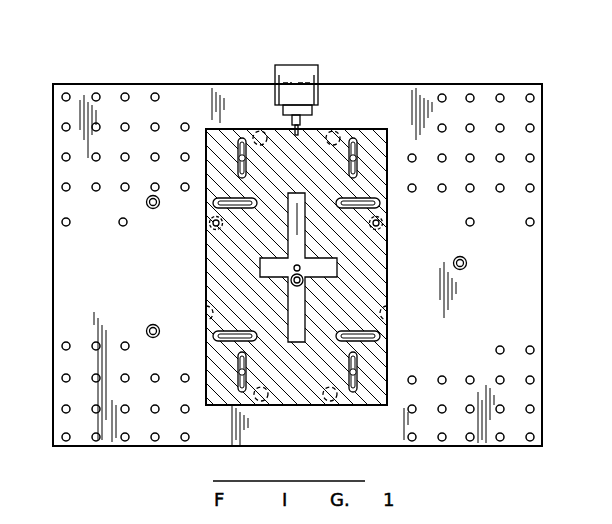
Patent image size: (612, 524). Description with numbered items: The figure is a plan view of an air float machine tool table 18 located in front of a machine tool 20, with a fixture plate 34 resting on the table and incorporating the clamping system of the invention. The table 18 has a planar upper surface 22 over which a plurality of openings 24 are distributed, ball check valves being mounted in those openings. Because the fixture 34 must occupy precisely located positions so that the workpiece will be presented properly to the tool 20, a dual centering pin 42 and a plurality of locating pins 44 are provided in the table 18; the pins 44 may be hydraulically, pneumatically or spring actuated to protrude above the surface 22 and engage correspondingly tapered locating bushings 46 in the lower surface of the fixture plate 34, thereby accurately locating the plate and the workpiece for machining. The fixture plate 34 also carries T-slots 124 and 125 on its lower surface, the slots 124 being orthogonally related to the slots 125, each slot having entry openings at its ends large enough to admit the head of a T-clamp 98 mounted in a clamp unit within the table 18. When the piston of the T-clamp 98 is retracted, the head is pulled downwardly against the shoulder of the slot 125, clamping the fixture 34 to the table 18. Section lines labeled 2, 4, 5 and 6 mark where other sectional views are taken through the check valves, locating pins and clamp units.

The air float machine tool table 18 is at (423, 68).
The machine tool 20 is at (276, 78).
The planar upper surface 22 is at (526, 256).
The openings 24 is at (68, 93).
The fixture plate 34 is at (372, 406).
The dual centering pin 42 is at (283, 281).
The locating pins 44 is at (148, 206).
The locating bushings 46 is at (334, 130).
The T-clamp 98 is at (358, 153).
The T-slots 124 is at (231, 202).
The T-slots 125 is at (239, 166).
The section line 2- 2 is at (222, 164).
The section line 4- 4 is at (148, 89).
The section line 5- 5 is at (214, 212).
The section line 6- 6 is at (300, 268).